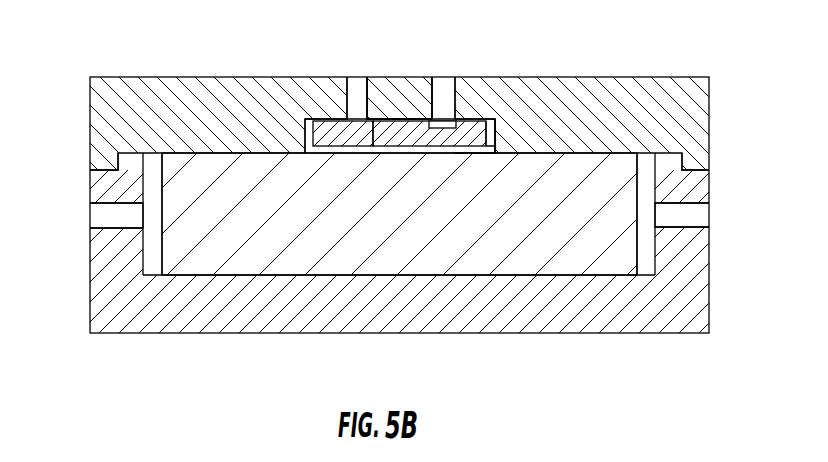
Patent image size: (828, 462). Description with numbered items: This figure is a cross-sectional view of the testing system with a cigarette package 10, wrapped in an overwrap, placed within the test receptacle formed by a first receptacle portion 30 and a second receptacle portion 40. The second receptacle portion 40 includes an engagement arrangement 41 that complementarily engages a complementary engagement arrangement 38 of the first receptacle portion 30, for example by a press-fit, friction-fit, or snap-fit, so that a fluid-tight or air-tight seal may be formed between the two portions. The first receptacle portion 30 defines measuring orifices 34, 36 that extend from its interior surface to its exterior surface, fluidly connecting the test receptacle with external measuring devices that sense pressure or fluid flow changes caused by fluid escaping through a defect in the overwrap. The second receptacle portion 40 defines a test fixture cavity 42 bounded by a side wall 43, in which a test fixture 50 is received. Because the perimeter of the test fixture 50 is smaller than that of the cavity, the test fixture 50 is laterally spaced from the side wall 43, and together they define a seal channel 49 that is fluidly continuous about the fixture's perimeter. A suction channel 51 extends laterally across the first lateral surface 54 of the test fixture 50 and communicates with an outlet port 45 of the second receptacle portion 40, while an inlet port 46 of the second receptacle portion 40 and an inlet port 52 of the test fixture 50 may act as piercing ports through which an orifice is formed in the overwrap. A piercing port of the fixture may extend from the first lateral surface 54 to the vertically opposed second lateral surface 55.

The cigarette package 10 is at (226, 219).
The first receptacle portion 30 is at (460, 337).
The measuring orifice 34 is at (88, 213).
The measuring orifice 36 is at (712, 216).
The complementary engagement arrangement 38 is at (137, 165).
The second receptacle portion 40 is at (180, 77).
The engagement arrangement 41 is at (116, 156).
The test fixture cavity 42 is at (300, 118).
The side wall 43 is at (512, 138).
The outlet port 45 is at (447, 76).
The inlet port 46 is at (354, 77).
The seal channel 49 is at (498, 122).
The test fixture 50 is at (393, 117).
The suction channel 51 is at (452, 116).
The inlet port 52 is at (352, 121).
The first lateral surface 54 is at (412, 115).
The second lateral surface 55 is at (400, 152).